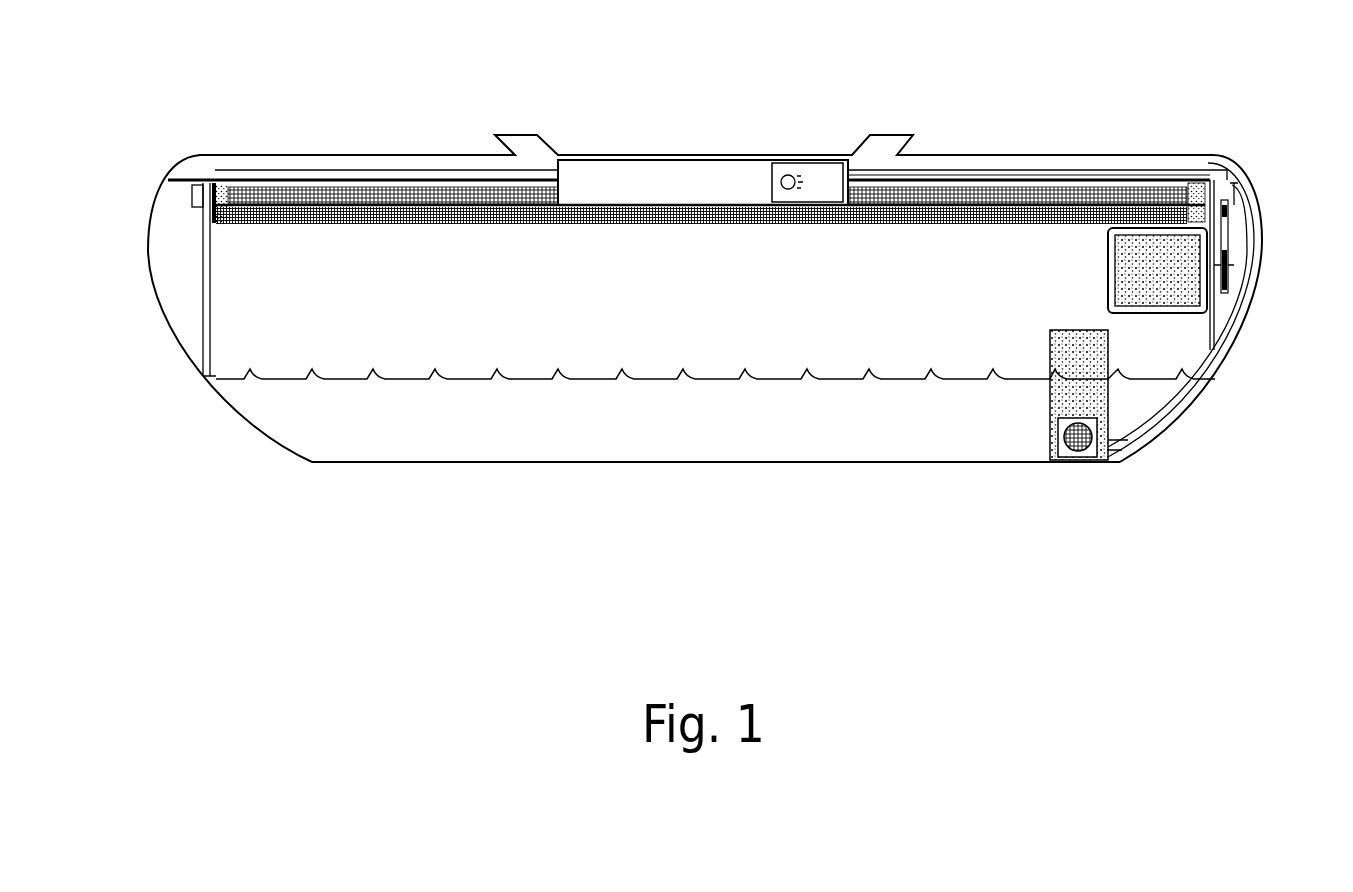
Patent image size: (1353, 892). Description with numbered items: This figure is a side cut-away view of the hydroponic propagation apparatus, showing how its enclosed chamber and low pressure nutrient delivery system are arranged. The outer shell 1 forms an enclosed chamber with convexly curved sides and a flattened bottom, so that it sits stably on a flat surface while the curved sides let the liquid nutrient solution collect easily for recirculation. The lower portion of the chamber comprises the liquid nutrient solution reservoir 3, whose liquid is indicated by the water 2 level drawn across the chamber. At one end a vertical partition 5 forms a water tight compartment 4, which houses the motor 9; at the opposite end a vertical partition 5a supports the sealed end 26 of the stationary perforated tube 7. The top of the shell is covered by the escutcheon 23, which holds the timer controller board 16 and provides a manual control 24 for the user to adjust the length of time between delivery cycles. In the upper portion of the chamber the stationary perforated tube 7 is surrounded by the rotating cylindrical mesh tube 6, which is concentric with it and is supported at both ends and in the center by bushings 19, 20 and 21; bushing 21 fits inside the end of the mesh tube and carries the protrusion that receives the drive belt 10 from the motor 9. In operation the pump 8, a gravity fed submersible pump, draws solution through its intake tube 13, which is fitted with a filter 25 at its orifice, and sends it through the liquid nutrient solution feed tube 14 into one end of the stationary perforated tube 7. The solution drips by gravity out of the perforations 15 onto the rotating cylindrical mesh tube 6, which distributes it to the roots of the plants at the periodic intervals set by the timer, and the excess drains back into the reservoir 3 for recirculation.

The outer shell 1 is at (270, 445).
The water 2 is at (523, 320).
The liquid nutrient solution reservoir 3 is at (722, 443).
The water tight compartment 4 is at (1240, 245).
The vertical partition 5 is at (1213, 365).
The vertical partition 5a is at (203, 370).
The rotating cylindrical mesh tube 6 is at (303, 223).
The stationary perforated tube 7 is at (358, 185).
The pump 8 is at (1080, 395).
The motor 9 is at (1195, 300).
The drive belt 10 is at (1225, 232).
The intake tube 13 is at (1062, 455).
The liquid nutrient solution feed tube 14 is at (1167, 415).
The perforations 15 is at (1168, 195).
The timer controller board 16 is at (725, 180).
The bushing 19 is at (215, 170).
The bushing 20 is at (707, 220).
The bushing 21 is at (1197, 183).
The escutcheon 23 is at (960, 155).
The manual control 24 is at (792, 178).
The filter 25 is at (1082, 440).
The sealed end 26 is at (197, 203).